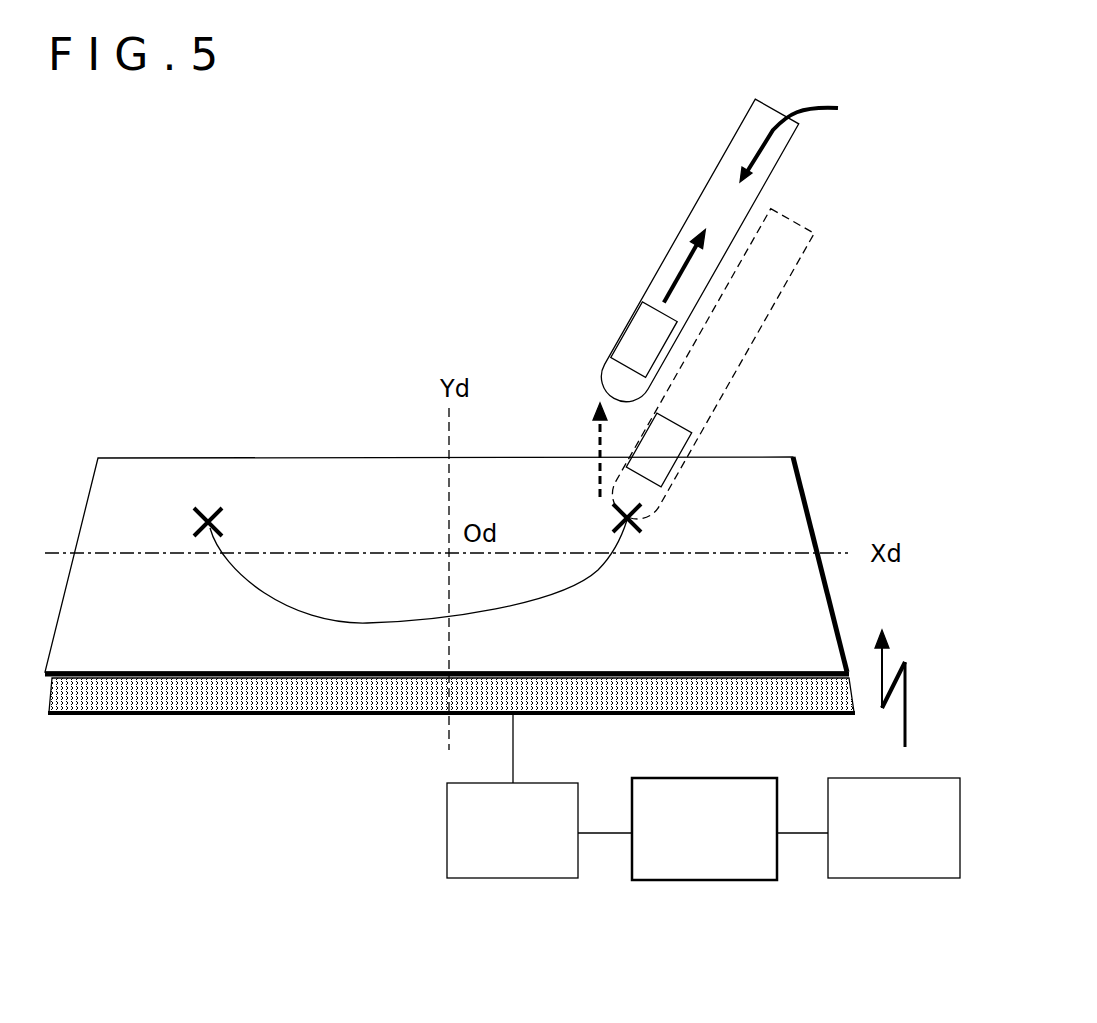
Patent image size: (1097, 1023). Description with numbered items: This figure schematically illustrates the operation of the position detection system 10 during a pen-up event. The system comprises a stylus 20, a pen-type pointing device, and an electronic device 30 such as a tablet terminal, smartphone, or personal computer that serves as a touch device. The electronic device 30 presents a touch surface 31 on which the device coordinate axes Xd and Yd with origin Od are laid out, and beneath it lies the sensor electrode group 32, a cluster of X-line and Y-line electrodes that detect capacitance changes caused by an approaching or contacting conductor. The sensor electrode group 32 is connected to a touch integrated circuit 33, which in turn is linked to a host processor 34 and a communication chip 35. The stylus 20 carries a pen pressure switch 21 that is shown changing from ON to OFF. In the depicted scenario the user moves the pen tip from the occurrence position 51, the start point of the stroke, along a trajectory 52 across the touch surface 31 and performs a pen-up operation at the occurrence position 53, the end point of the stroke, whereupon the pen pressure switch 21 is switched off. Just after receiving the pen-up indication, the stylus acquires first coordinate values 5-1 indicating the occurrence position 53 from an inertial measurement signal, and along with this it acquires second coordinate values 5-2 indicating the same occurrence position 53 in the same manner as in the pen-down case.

The position detection system 10 is at (258, 137).
The stylus 20 is at (713, 313).
The pen pressure switch 21 is at (644, 339).
The electronic device 30 is at (450, 538).
The touch surface 31 is at (137, 478).
The sensor electrode group 32 is at (272, 708).
The touch integrated circuit 33 is at (508, 878).
The host processor 34 is at (703, 880).
The communication chip 35 is at (896, 878).
The occurrence position 51 is at (216, 526).
The trajectory 52 is at (594, 580).
The occurrence position 53 is at (636, 523).
The first coordinate values 5-1 is at (685, 266).
The second coordinate values 5-2 is at (817, 140).